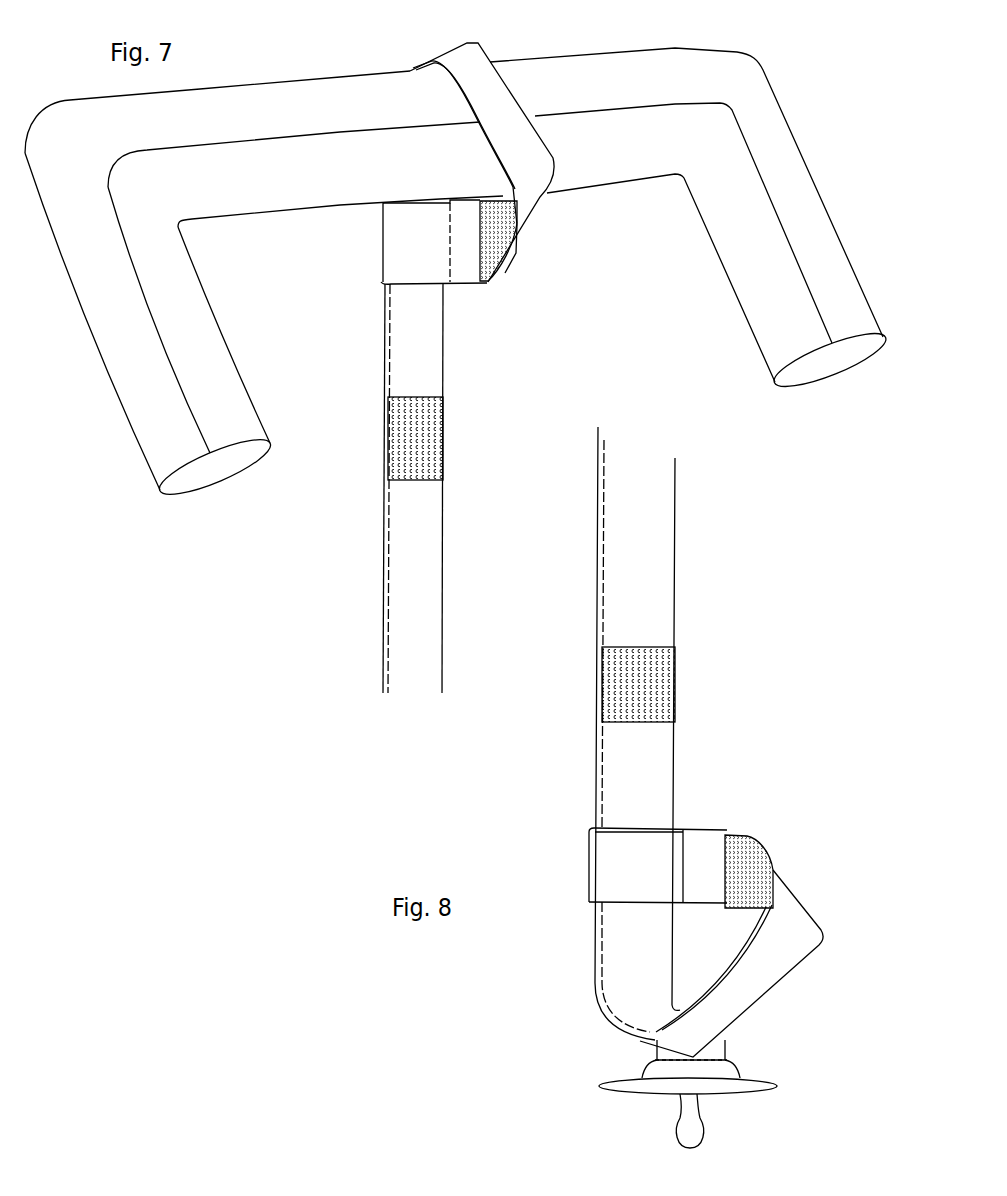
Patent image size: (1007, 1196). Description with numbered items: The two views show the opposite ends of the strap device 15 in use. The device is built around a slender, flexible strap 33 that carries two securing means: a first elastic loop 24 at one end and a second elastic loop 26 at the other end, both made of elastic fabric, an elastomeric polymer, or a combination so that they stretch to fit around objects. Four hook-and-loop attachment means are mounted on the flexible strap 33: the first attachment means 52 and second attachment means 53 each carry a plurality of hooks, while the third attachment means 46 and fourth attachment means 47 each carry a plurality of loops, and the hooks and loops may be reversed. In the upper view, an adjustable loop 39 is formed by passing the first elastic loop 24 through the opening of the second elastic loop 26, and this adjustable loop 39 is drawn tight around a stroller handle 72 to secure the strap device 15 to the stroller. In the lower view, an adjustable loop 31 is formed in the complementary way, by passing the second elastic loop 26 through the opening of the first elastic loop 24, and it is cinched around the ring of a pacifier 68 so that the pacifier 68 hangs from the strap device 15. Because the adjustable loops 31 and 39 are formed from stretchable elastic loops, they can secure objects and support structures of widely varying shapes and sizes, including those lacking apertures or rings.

In FIG. 7, the strap device 15 is at (433, 358).
In FIG. 8, the strap device 15 is at (698, 745).
In FIG. 8, the first elastic loop 24 is at (617, 880).
In FIG. 7, the second elastic loop 26 is at (402, 228).
In FIG. 8, the adjustable loop 31 is at (793, 972).
In FIG. 7, the flexible strap 33 is at (425, 577).
In FIG. 8, the flexible strap 33 is at (637, 733).
In FIG. 7, the adjustable loop 39 is at (473, 52).
In FIG. 8, the third attachment means 46 is at (602, 705).
In FIG. 7, the fourth attachment means 47 is at (390, 412).
In FIG. 8, the first attachment means 52 is at (727, 833).
In FIG. 7, the second attachment means 53 is at (482, 285).
In FIG. 8, the pacifier 68 is at (801, 1084).
In FIG. 7, the stroller handle 72 is at (790, 108).